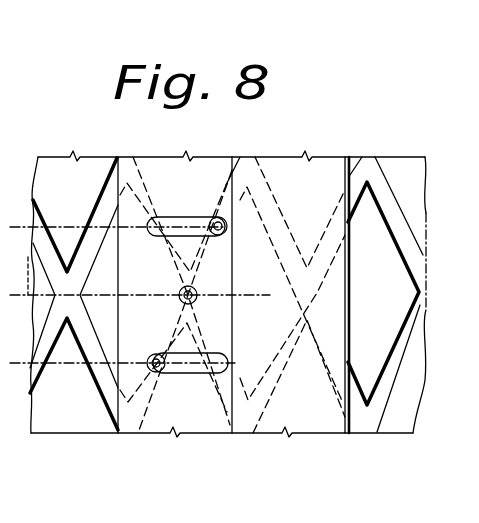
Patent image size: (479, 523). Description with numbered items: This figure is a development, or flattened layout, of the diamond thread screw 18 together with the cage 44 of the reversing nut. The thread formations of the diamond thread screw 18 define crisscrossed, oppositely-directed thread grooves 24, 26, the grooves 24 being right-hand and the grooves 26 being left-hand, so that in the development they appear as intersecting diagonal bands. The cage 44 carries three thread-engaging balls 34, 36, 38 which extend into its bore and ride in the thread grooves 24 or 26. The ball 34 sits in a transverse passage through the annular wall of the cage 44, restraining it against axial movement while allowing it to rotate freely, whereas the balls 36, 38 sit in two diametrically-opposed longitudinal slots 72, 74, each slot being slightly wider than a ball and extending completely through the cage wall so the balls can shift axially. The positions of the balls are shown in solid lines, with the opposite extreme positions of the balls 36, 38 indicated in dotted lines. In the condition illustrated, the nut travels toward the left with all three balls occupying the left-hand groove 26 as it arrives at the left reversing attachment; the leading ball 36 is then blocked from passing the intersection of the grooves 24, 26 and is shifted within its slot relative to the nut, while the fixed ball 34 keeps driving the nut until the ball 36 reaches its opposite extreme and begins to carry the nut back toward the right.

The diamond thread screw 18 is at (88, 430).
The cage 44 is at (307, 415).
The thread groove 24 is at (392, 213).
The thread groove 26 is at (388, 387).
The ball 34 is at (182, 291).
The ball 36 is at (151, 359).
The ball 38 is at (225, 222).
The longitudinal slot 72 is at (186, 358).
The longitudinal slot 74 is at (183, 233).